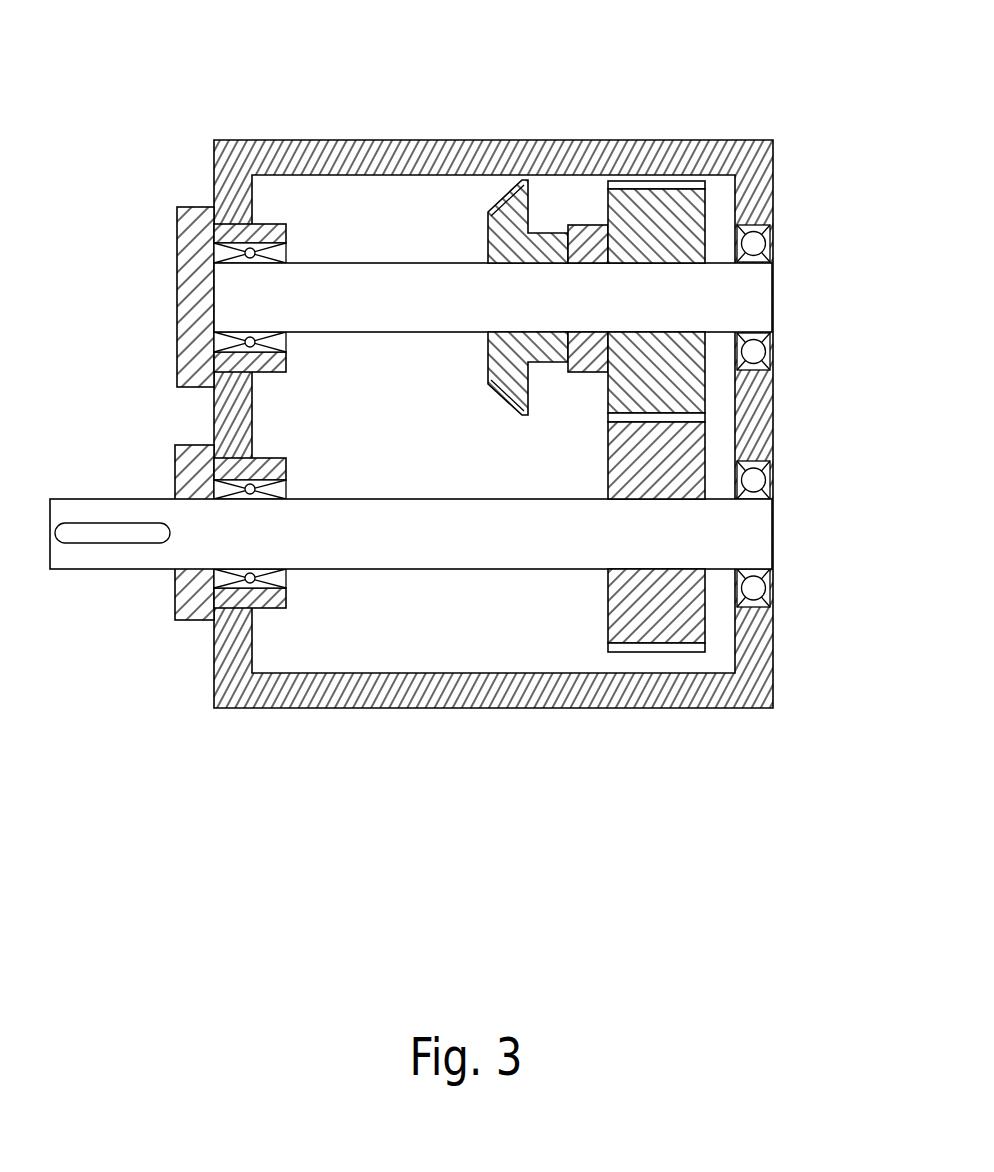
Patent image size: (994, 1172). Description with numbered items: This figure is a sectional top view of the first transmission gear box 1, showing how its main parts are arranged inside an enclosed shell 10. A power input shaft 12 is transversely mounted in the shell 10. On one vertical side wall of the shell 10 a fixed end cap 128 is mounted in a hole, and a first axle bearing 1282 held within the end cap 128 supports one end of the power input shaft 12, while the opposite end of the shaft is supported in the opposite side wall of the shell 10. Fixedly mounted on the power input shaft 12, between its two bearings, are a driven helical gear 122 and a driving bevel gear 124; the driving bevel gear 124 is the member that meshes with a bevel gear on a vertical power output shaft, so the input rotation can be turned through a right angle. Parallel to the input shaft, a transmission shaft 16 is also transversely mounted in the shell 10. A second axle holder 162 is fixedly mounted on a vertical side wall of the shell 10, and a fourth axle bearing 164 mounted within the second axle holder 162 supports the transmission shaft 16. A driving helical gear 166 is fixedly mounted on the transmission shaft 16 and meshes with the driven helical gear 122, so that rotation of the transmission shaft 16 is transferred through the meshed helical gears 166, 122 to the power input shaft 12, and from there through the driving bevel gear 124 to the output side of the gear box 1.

The first transmission gear box 1 is at (749, 86).
The enclosed shell 10 is at (392, 147).
The power input shaft 12 is at (758, 303).
The driven helical gear 122 is at (677, 202).
The driving bevel gear 124 is at (512, 183).
The fixed end cap 128 is at (183, 230).
The first axle bearing 1282 is at (228, 252).
The transmission shaft 16 is at (755, 537).
The second axle holder 162 is at (180, 600).
The fourth axle bearing 164 is at (760, 477).
The driving helical gear 166 is at (673, 633).